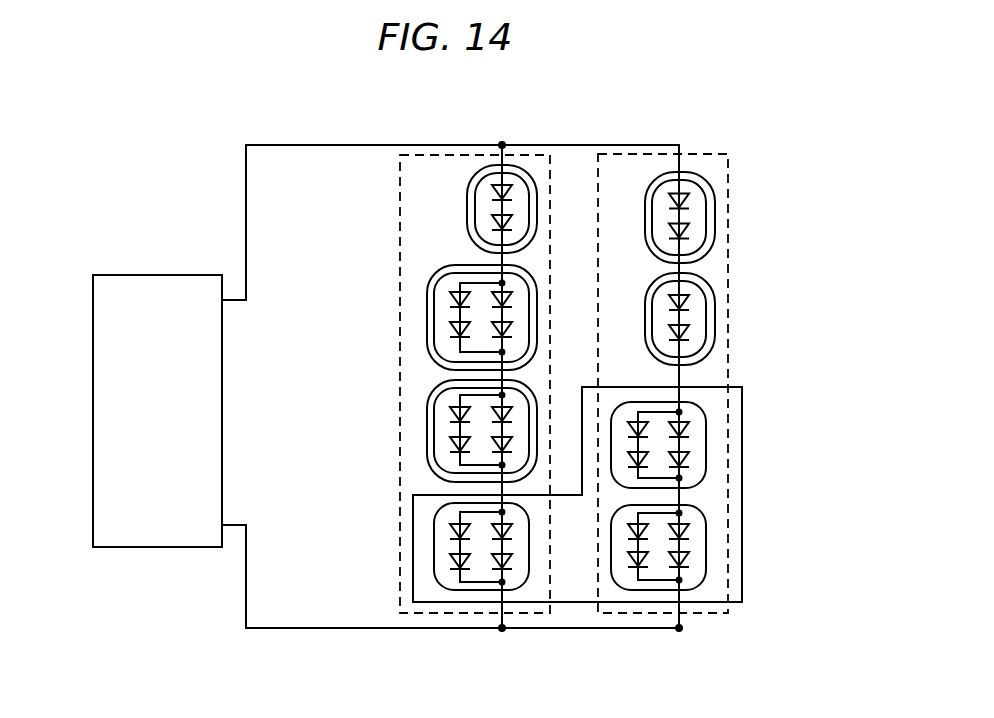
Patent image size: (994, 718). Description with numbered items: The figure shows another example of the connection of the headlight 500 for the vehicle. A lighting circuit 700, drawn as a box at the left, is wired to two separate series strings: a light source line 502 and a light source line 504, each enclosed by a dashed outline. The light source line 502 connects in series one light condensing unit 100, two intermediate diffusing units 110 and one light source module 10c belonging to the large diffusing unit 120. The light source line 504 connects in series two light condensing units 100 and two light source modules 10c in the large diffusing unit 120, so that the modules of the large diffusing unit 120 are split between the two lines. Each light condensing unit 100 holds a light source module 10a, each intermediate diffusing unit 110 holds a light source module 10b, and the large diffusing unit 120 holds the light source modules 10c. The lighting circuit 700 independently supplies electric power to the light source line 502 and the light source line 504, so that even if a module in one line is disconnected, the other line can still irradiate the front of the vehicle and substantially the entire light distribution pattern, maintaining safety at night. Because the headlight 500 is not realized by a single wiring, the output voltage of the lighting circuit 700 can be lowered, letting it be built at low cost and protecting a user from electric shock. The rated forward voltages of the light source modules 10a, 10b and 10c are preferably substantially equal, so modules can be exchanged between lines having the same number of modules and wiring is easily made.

The headlight for the vehicle 500 is at (110, 148).
The lighting circuit 700 is at (172, 274).
The light source line 502 is at (518, 155).
The light source line 504 is at (700, 154).
The light condensing unit 100 is at (467, 208).
The intermediate diffusing unit 110 is at (427, 282).
The light source module 10a is at (529, 210).
The light source module 10b is at (529, 303).
The light source module 10c is at (529, 565).
The large diffusing unit 120 is at (742, 440).